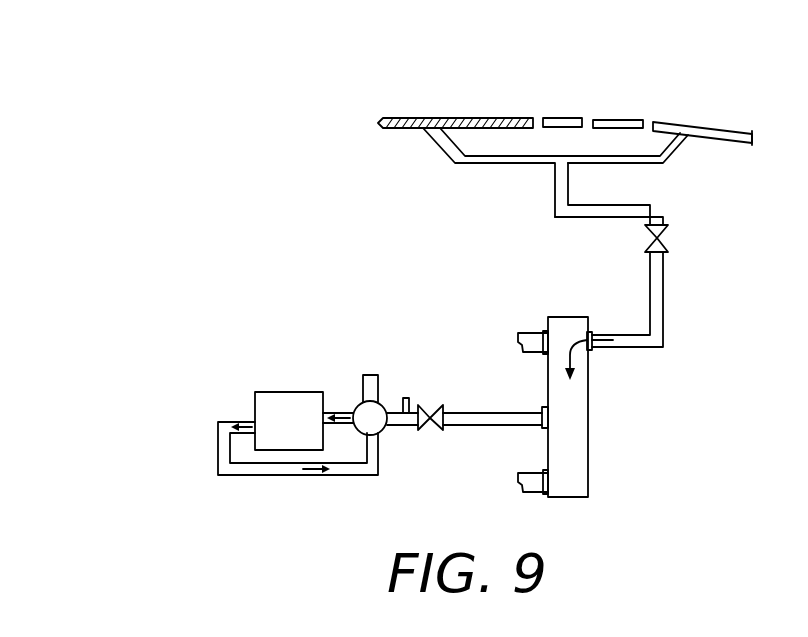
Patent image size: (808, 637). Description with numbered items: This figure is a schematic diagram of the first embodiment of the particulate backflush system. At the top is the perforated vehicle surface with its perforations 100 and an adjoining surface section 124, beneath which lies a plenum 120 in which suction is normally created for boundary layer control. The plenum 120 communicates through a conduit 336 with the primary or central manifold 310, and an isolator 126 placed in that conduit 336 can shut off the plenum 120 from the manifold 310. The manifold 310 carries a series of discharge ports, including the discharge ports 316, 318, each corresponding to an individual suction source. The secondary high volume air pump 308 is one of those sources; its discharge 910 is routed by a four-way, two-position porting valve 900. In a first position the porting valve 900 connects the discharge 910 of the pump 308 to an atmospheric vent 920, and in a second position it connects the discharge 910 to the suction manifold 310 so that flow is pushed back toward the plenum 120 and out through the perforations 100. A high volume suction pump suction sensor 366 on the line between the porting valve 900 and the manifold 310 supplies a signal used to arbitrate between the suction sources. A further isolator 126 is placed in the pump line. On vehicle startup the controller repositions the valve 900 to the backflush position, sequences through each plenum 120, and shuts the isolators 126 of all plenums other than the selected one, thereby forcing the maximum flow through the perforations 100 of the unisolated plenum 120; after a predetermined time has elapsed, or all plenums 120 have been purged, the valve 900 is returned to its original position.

The perforations 100 is at (536, 108).
The boundary layer suction slot section 124 is at (616, 108).
The plenum 120 is at (473, 164).
The conduit 336 is at (664, 212).
The isolators 126 is at (662, 242).
The primary manifold 310 is at (588, 410).
The discharge port 318 is at (542, 352).
The discharge port 316 is at (545, 429).
The high volume suction pump suction sensor 366 is at (407, 397).
The porting valve 900 is at (355, 403).
The atmospheric vent 920 is at (367, 375).
The high volume air pump 308 is at (263, 392).
The discharge 910 is at (218, 422).